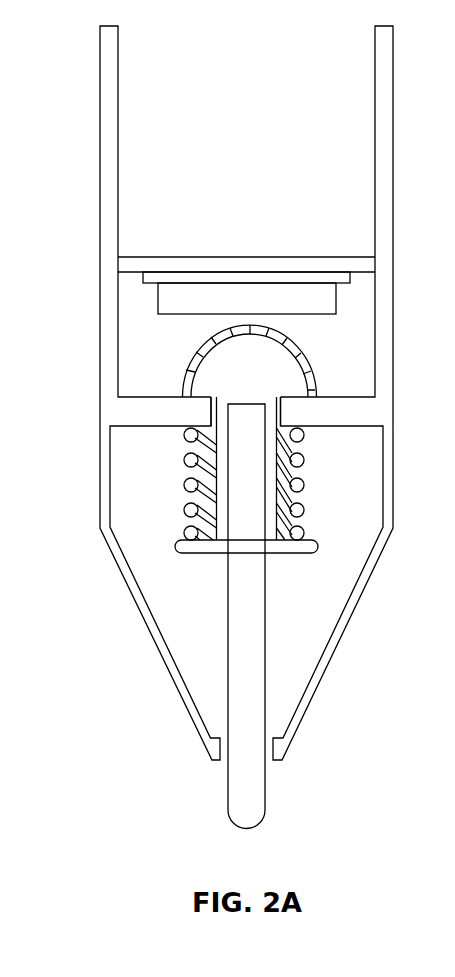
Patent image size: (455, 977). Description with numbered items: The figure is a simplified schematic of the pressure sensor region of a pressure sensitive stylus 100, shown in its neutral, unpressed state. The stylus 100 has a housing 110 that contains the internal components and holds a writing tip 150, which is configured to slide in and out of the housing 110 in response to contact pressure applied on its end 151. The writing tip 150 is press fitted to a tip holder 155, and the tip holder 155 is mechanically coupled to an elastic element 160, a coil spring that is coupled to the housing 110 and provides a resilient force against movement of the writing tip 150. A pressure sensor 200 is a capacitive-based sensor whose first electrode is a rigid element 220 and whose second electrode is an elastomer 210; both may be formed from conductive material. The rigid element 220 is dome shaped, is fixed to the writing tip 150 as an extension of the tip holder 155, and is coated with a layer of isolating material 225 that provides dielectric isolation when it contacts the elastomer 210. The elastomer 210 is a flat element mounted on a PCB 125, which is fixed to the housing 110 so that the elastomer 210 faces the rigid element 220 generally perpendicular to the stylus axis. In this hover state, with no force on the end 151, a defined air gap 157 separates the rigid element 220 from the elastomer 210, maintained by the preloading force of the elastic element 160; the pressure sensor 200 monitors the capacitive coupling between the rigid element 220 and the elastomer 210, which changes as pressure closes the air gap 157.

The stylus 100 is at (79, 98).
The housing 110 is at (185, 693).
The printed circuit board assembly 125 is at (343, 283).
The writing tip 150 is at (228, 780).
The end 151 is at (242, 828).
The tip holder 155 is at (293, 553).
The air gap 157 is at (247, 322).
The elastic element 160 is at (187, 467).
The pressure sensor 200 is at (177, 365).
The elastomer 210 is at (185, 295).
The rigid element 220 is at (277, 398).
The layer of isolating material 225 is at (303, 363).